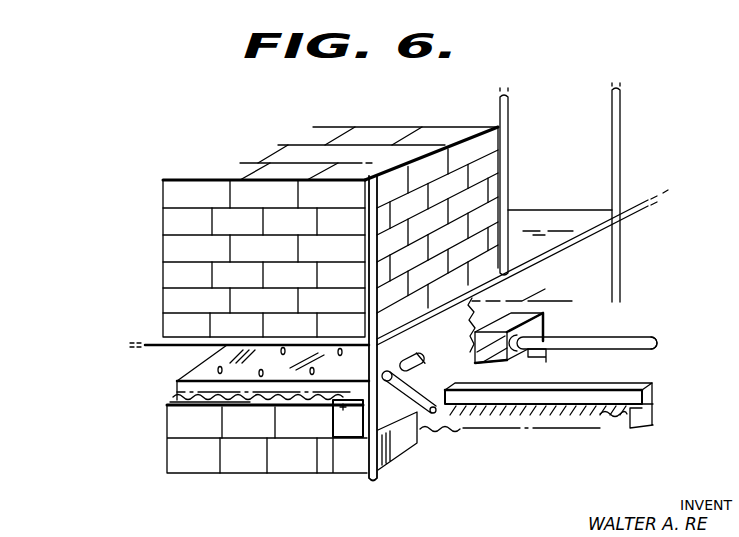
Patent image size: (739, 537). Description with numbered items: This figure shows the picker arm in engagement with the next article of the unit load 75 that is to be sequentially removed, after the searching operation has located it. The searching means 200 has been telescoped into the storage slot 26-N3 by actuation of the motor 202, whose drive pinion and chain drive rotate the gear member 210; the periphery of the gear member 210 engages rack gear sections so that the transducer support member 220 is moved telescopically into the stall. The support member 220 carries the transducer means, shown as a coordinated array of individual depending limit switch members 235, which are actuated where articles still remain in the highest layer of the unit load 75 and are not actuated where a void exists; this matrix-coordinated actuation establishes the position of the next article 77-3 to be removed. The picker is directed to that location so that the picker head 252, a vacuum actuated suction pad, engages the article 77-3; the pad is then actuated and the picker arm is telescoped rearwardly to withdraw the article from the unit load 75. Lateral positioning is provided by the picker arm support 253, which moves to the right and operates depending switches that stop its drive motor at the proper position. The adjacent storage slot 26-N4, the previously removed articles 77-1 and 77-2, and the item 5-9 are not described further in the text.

The top course of wall blocks 26-N4 is at (316, 162).
The storage slot 26-N3 is at (165, 396).
The unit load 75 is at (251, 481).
The column post lower section 77-1 is at (352, 412).
The column bracket 77-2 is at (546, 365).
The next article to be removed 77-3 is at (517, 318).
The searching means 200 is at (648, 229).
The motor 202 is at (435, 344).
The gear member 210 is at (430, 430).
The transducer support member 220 is at (190, 369).
The limit switch members 235 is at (227, 408).
The picker head 252 is at (550, 332).
The picker arm support 253 is at (625, 334).
The push rod 5-9 is at (558, 342).